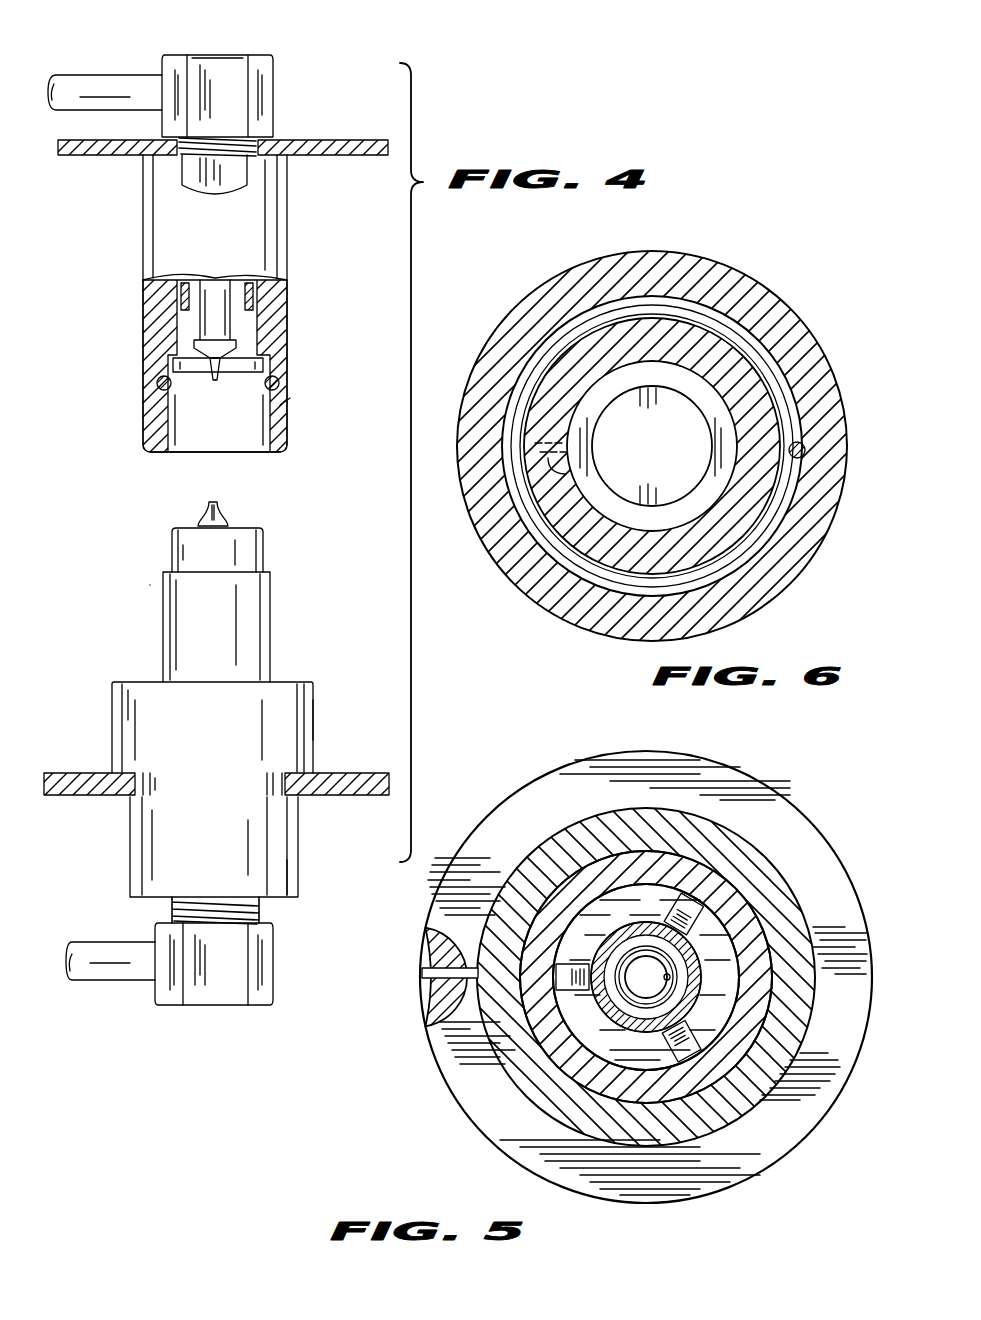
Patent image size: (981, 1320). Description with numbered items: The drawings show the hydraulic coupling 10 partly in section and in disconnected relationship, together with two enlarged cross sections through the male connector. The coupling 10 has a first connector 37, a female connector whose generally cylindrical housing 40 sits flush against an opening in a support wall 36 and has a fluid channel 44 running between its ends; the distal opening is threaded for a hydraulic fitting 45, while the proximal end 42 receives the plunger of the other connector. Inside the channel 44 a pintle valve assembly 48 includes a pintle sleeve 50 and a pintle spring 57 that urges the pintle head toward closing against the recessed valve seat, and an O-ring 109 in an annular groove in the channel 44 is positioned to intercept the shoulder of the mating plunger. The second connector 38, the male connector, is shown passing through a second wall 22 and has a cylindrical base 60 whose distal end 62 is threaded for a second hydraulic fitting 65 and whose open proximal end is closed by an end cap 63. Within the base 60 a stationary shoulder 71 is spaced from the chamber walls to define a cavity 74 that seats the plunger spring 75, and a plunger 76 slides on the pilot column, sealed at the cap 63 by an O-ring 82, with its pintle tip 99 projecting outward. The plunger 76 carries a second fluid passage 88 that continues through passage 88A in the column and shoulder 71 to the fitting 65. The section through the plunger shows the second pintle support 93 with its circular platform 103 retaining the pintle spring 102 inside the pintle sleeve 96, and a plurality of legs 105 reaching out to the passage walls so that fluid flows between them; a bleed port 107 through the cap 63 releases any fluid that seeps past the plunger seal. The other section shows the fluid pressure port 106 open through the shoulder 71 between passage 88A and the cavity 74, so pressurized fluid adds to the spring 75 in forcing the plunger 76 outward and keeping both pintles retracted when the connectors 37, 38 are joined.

In FIG. 4, the hydraulic coupling 10 is at (140, 597).
In FIG. 4, the mounting plate 22 is at (352, 800).
In FIG. 4, the support wall 36 is at (325, 140).
In FIG. 4, the first connector 37 is at (295, 253).
In FIG. 4, the second connector 38 is at (318, 728).
In FIG. 4, the housing 40 is at (255, 220).
In FIG. 5, the housing 40 is at (675, 825).
In FIG. 4, the proximal end 42 is at (280, 405).
In FIG. 4, the fluid channel 44 is at (178, 332).
In FIG. 4, the hydraulic fitting 45 is at (265, 72).
In FIG. 4, the pintle valve assembly 48 is at (250, 333).
In FIG. 4, the pintle sleeve 50 is at (185, 298).
In FIG. 4, the pintle spring 57 is at (215, 380).
In FIG. 4, the cylindrical base 60 is at (160, 843).
In FIG. 6, the cylindrical base 60 is at (770, 305).
In FIG. 4, the distal end 62 is at (278, 886).
In FIG. 4, the end cap 63 is at (145, 712).
In FIG. 5, the end cap 63 is at (503, 820).
In FIG. 4, the second hydraulic fitting 65 is at (215, 1008).
In FIG. 6, the shoulder 71 is at (685, 345).
In FIG. 6, the cavity 74 is at (790, 510).
In FIG. 6, the plunger spring 75 is at (800, 440).
In FIG. 5, the plunger 76 is at (700, 880).
In FIG. 4, the O-ring 82 is at (157, 385).
In FIG. 5, the fluid passage 88 is at (597, 918).
In FIG. 6, the passage 88A is at (590, 446).
In FIG. 5, the pintle support 93 is at (730, 925).
In FIG. 5, the pintle sleeve 96 is at (608, 1007).
In FIG. 4, the pintle tip 99 is at (206, 512).
In FIG. 5, the pintle spring 102 is at (670, 977).
In FIG. 5, the circular platform 103 is at (616, 1030).
In FIG. 5, the legs 105 is at (690, 905).
In FIG. 6, the fluid pressure port 106 is at (565, 474).
In FIG. 5, the bleed port 107 is at (428, 1010).
In FIG. 4, the O-ring 109 is at (279, 384).